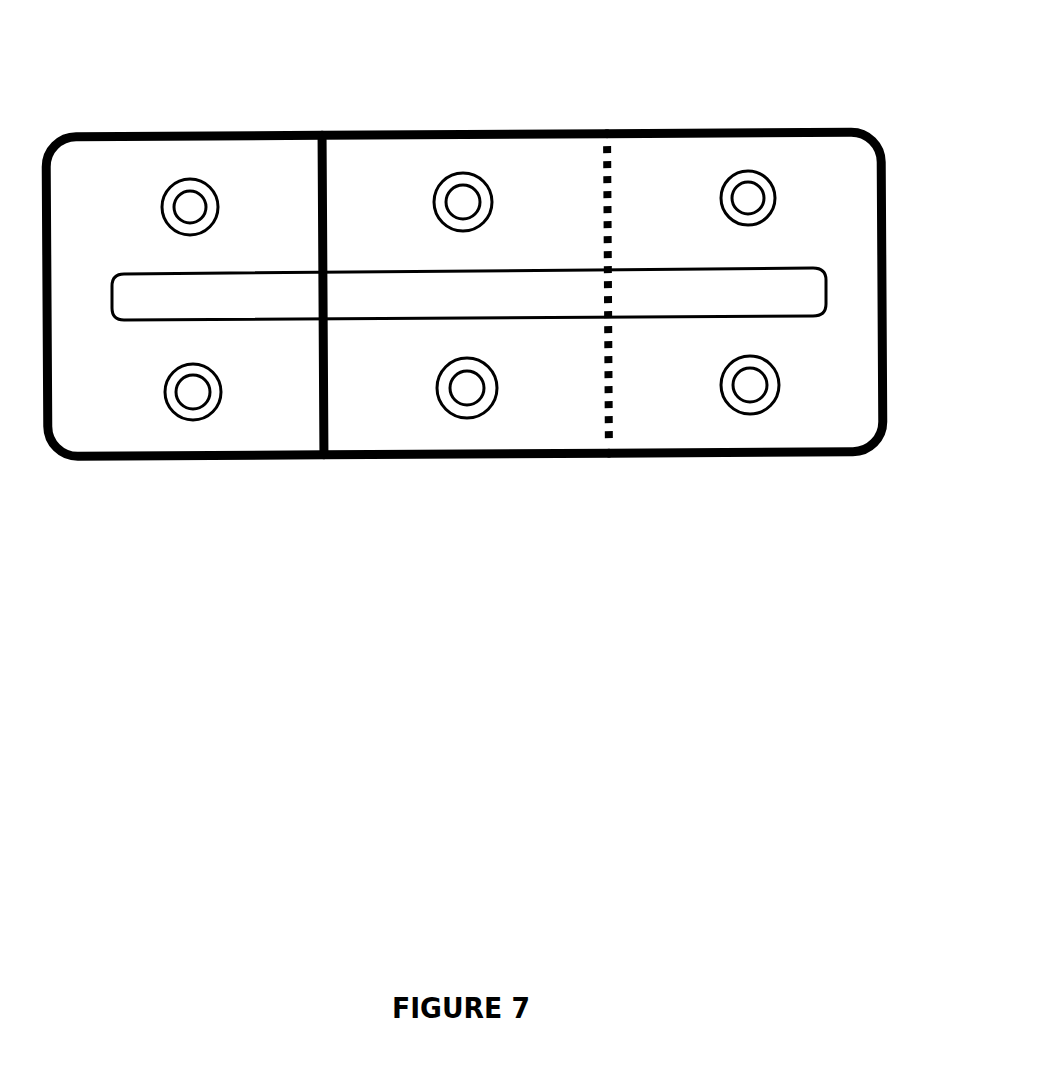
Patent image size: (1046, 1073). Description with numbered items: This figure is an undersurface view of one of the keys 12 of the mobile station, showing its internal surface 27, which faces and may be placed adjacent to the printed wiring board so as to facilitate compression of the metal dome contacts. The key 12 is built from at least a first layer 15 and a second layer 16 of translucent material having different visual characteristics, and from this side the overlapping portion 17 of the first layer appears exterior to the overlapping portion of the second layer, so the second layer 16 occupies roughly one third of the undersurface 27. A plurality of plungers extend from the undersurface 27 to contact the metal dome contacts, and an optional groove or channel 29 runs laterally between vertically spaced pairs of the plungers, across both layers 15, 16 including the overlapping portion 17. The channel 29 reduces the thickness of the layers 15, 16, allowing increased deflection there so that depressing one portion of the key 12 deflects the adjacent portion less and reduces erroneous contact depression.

The key 12 is at (622, 98).
The first layer 15 is at (715, 158).
The second layer 16 is at (242, 152).
The overlapping portion of the first layer 17 is at (393, 158).
The undersurface 27 is at (858, 423).
The channel 29 is at (826, 290).